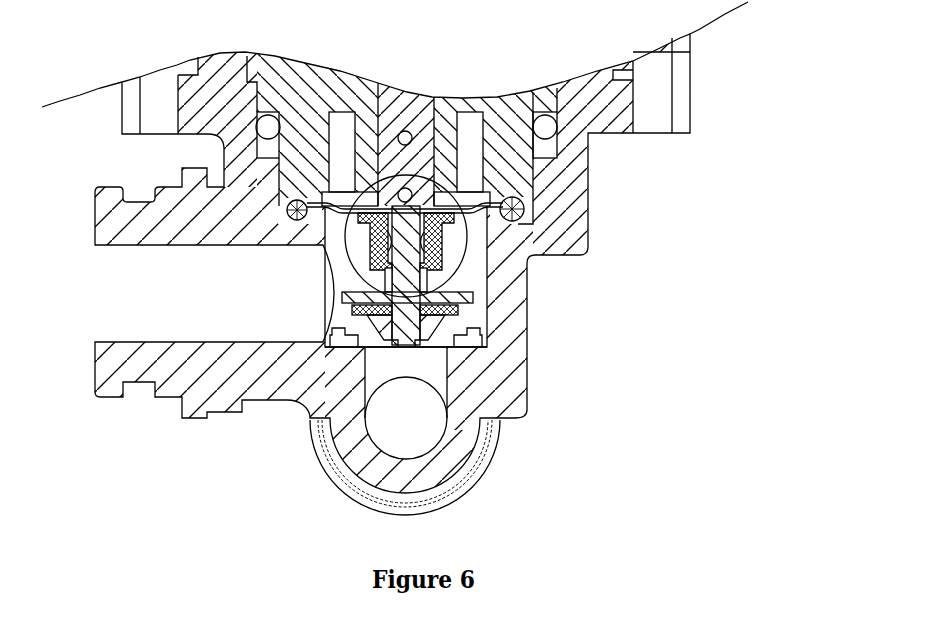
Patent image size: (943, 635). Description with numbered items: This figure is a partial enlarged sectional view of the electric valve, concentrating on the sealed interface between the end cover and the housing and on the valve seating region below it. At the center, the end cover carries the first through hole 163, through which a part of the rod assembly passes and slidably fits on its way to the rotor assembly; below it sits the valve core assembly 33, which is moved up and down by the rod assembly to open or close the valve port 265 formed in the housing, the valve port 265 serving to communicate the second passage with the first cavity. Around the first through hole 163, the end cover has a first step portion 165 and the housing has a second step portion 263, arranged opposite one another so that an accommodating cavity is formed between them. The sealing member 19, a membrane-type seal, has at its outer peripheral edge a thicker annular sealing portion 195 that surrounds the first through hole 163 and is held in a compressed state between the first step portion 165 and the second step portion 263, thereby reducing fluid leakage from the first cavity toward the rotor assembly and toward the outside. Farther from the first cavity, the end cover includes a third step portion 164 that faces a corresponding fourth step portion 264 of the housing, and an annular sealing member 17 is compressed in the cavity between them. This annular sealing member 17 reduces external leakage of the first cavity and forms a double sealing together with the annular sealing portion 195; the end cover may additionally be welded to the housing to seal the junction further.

The sealing member 19 is at (532, 262).
The third step portion 164 is at (570, 108).
The annular sealing member 17 is at (552, 128).
The fourth step portion 264 is at (537, 160).
The first through hole 163 is at (434, 173).
The second step portion 263 is at (470, 197).
The first step portion 165 is at (536, 200).
The annular sealing portion 195 is at (522, 210).
The valve core assembly 33 is at (464, 295).
The valve port 265 is at (427, 348).